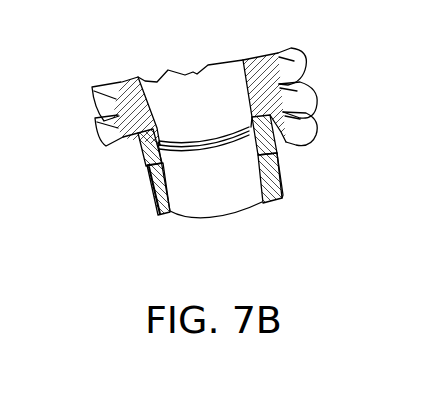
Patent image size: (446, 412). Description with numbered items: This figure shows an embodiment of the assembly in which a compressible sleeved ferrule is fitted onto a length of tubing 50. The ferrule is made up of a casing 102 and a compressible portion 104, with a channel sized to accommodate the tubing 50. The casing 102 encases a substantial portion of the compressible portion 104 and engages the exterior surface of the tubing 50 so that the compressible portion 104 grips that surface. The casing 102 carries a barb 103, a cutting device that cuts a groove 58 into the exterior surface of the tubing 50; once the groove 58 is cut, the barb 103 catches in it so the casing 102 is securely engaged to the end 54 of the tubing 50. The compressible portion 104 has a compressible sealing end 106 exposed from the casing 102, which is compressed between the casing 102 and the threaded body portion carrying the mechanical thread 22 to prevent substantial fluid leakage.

The mechanical thread 22 is at (310, 92).
The length of tubing 50 is at (197, 78).
The end of the length of tubing 54 is at (233, 208).
The groove 58 is at (184, 148).
The casing 102 is at (145, 146).
The barb 103 is at (247, 131).
The compressible portion 104 is at (275, 183).
The compressible sealing end 106 is at (159, 226).